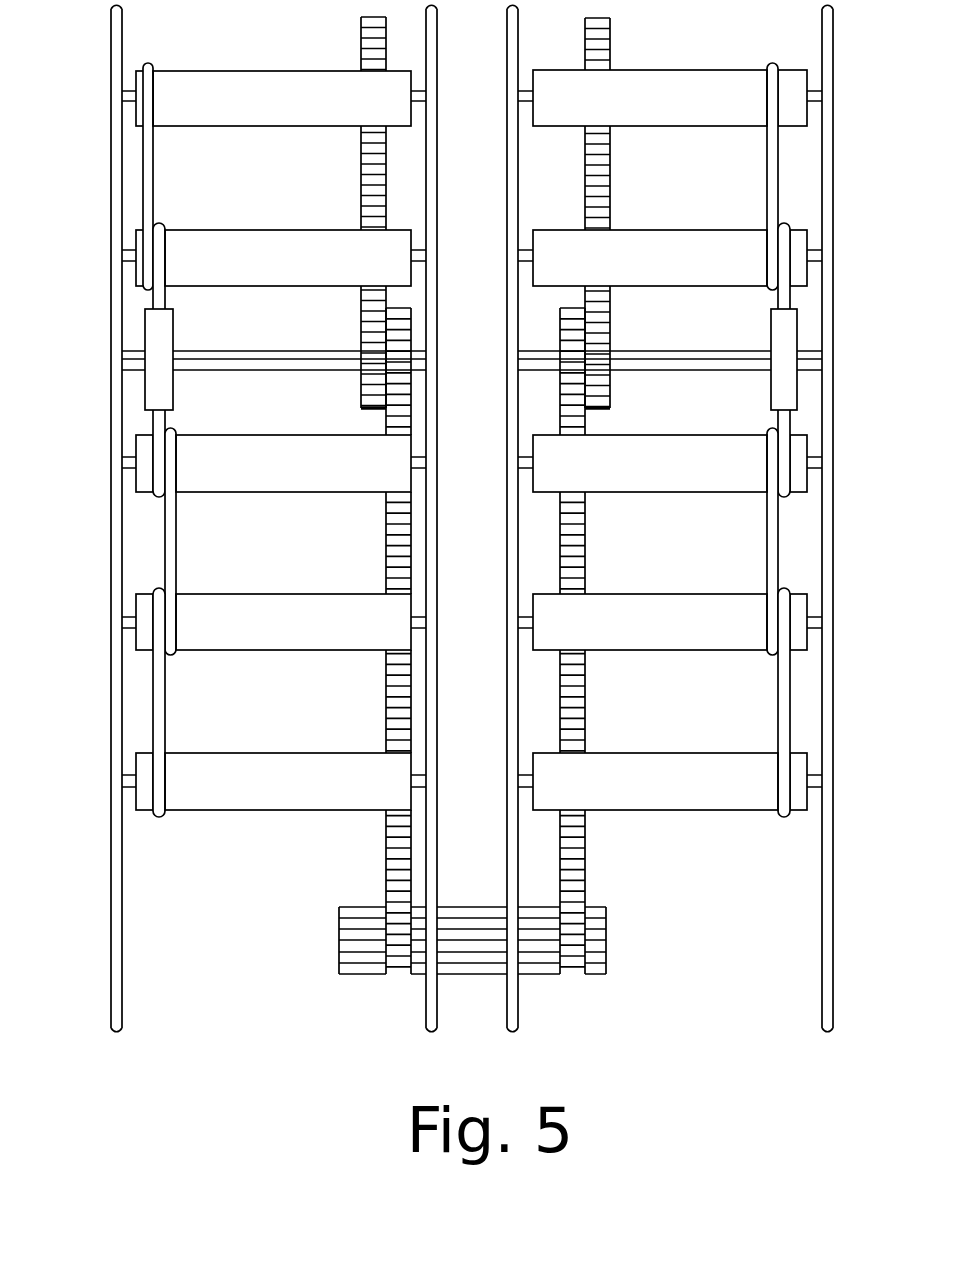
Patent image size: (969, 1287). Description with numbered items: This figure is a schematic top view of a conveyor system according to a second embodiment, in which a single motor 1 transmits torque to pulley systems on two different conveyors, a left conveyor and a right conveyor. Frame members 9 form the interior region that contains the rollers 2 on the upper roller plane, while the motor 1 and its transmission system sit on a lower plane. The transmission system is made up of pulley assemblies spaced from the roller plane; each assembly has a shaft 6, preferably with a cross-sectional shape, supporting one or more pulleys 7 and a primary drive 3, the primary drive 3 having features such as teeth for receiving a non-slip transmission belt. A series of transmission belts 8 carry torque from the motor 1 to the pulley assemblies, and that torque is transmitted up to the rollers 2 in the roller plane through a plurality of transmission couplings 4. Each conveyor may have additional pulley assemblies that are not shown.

The motor 1 is at (339, 942).
The rollers 2 is at (293, 650).
The primary drive 3 is at (361, 397).
The transmission couplings 4 is at (143, 178).
The shaft 6 is at (263, 350).
The pulley 7 is at (797, 388).
The transmission belts 8 is at (361, 177).
The frame members 9 is at (111, 920).